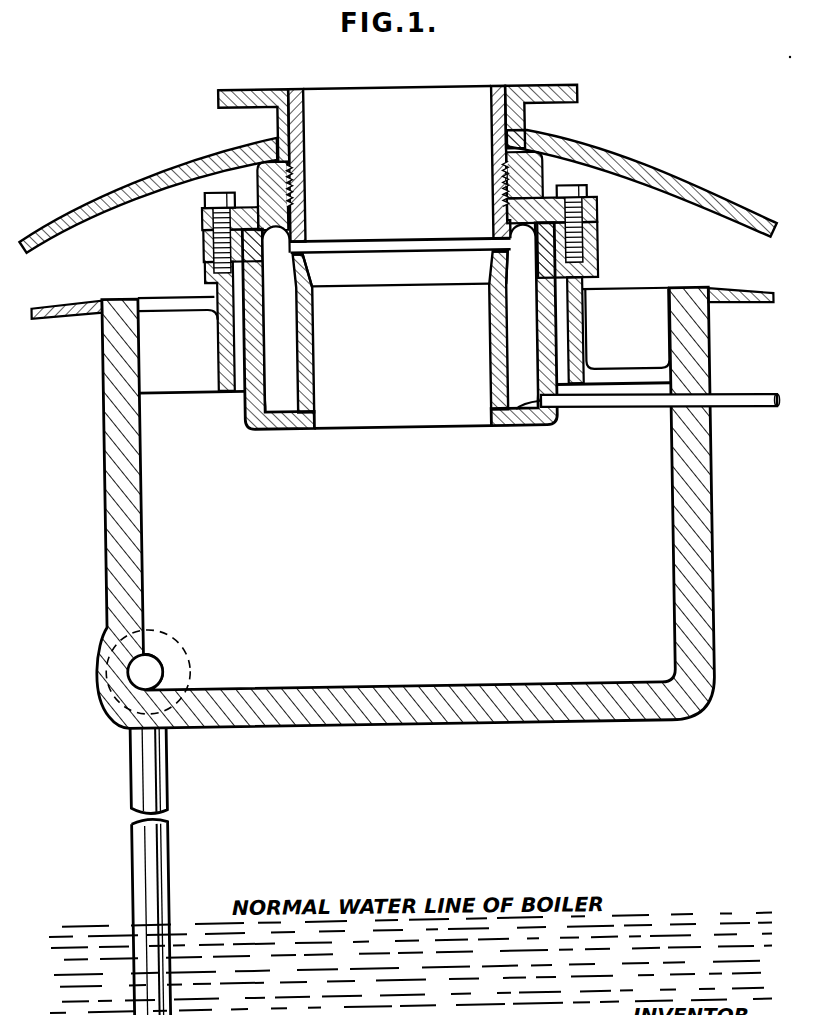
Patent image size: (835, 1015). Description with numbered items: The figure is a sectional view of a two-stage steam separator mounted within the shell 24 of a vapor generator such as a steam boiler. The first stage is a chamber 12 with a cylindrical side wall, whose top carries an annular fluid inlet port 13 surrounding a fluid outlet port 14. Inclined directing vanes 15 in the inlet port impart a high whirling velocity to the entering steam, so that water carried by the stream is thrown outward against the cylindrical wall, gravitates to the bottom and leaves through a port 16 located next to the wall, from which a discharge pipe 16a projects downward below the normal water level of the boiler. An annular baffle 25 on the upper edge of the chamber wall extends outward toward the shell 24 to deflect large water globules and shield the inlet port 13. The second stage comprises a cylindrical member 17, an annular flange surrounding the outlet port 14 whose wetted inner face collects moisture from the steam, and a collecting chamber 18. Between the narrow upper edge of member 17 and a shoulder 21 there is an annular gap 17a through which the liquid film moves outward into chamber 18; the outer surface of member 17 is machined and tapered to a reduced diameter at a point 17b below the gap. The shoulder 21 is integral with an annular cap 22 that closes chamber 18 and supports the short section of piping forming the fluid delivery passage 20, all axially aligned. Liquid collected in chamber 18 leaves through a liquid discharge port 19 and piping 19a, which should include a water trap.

The chamber 12 is at (697, 568).
The fluid inlet port 13 is at (650, 291).
The fluid outlet port 14 is at (401, 430).
The inclined directing vanes 15 is at (653, 337).
The port 16 is at (136, 673).
The discharge pipe 16a is at (218, 776).
The cylindrical member 17 is at (407, 328).
The annular gap 17a is at (502, 245).
The point of reduced diameter 17b is at (302, 294).
The collecting chamber 18 is at (401, 317).
The liquid discharge port 19 is at (518, 430).
The piping 19a is at (620, 404).
The fluid conductor or passage 20 is at (398, 164).
The shoulder 21 is at (501, 221).
The annular cap 22 is at (260, 175).
The shell 24 is at (691, 190).
The annular baffle 25 is at (84, 298).